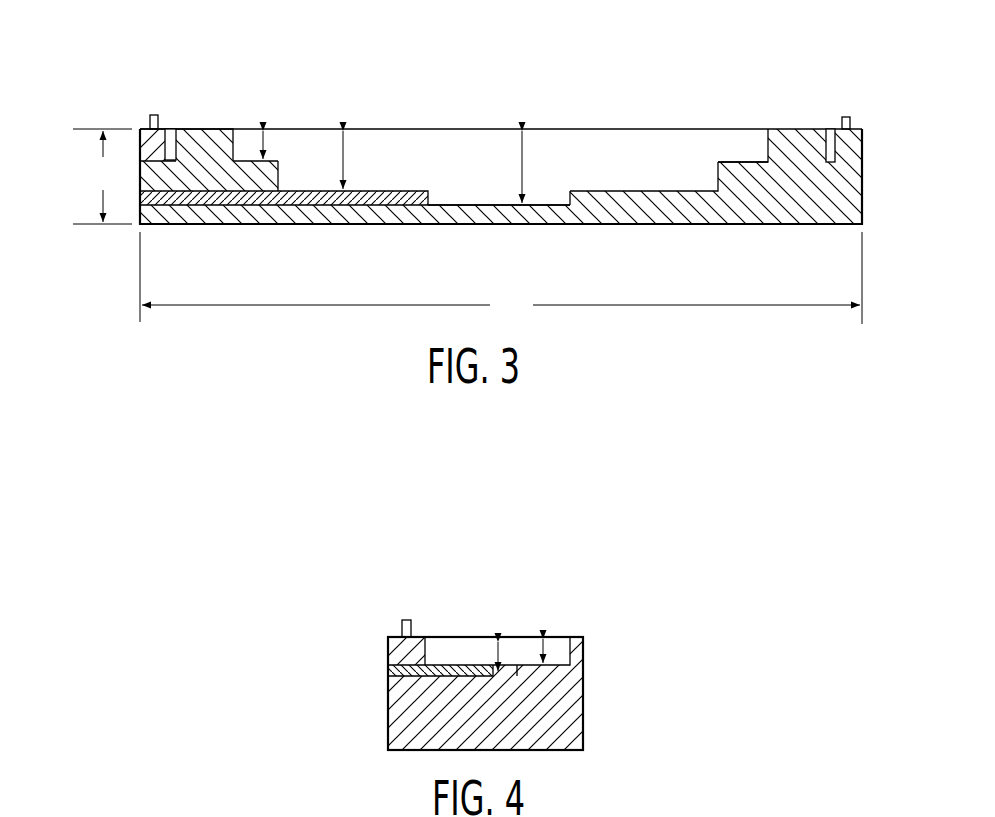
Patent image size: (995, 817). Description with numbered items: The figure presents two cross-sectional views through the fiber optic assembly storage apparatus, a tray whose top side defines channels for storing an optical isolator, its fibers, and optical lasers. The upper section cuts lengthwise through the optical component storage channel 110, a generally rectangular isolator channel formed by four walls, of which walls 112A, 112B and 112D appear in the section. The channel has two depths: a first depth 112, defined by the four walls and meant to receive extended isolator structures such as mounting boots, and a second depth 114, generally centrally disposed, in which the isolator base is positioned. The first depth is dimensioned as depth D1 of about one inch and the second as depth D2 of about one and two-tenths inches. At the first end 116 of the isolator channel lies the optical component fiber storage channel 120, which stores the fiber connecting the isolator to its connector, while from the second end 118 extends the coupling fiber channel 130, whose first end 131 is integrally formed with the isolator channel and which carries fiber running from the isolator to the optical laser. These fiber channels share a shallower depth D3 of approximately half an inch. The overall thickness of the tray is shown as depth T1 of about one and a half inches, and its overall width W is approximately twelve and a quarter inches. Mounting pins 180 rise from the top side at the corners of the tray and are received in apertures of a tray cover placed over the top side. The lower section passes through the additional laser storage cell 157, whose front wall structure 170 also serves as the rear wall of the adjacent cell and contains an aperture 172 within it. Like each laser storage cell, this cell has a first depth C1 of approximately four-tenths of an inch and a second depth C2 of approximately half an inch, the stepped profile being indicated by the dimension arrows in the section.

In FIG. 3, the optical component storage channel 110 is at (578, 150).
In FIG. 3, the first depth 112 is at (626, 185).
In FIG. 3, the wall 112A is at (487, 168).
In FIG. 3, the wall 112B is at (718, 175).
In FIG. 3, the wall 112D is at (280, 178).
In FIG. 3, the second depth 114 is at (542, 195).
In FIG. 3, the first end 116 is at (272, 160).
In FIG. 3, the second end 118 is at (715, 131).
In FIG. 3, the optical component fiber storage channel 120 is at (247, 130).
In FIG. 3, the coupling fiber channel 130 is at (167, 130).
In FIG. 3, the first end 131 is at (753, 140).
In FIG. 3, the mounting pin 180 is at (150, 117).
In FIG. 4, the mounting pin 180 is at (403, 620).
In FIG. 4, the laser storage cell 157 is at (440, 640).
In FIG. 4, the wall structure 170 is at (480, 640).
In FIG. 4, the aperture 172 is at (460, 663).
In FIG. 3, the first depth D1 is at (342, 157).
In FIG. 3, the second depth D2 is at (522, 163).
In FIG. 3, the depth D3 is at (262, 152).
In FIG. 3, the depth T1 is at (102, 176).
In FIG. 3, the overall width W is at (501, 278).
In FIG. 4, the first depth C1 is at (543, 650).
In FIG. 4, the second depth C2 is at (503, 665).